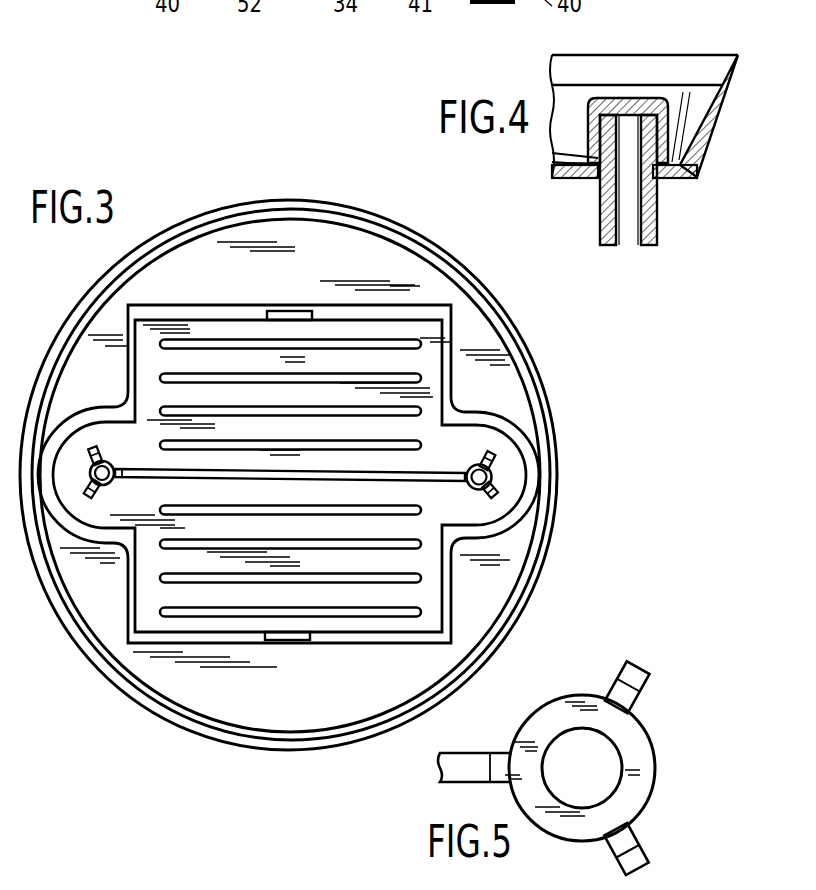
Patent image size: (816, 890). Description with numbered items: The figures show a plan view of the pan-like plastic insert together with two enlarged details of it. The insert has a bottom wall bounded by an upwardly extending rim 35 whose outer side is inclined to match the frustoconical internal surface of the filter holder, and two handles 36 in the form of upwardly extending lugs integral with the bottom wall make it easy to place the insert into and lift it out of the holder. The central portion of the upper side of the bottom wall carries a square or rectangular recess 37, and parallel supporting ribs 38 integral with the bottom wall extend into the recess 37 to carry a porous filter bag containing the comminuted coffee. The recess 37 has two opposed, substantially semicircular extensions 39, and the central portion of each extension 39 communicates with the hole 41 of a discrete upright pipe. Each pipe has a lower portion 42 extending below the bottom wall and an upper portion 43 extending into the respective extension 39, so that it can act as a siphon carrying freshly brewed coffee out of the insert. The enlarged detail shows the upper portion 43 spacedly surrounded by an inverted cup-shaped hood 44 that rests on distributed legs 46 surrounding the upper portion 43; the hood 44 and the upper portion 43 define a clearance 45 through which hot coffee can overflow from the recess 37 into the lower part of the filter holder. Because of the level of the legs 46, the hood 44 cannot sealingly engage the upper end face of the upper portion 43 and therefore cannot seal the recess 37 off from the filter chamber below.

In FIG. 3, the rim 35 is at (538, 357).
In FIG. 3, the handle 36 is at (297, 311).
In FIG. 3, the recess 37 is at (400, 333).
In FIG. 3, the supporting ribs 38 is at (413, 342).
In FIG. 3, the semicircular extension 39 is at (510, 455).
In FIG. 3, the hole 41 is at (484, 477).
In FIG. 5, the hole 41 is at (603, 757).
In FIG. 4, the lower portion 42 is at (658, 222).
In FIG. 3, the upper portion 43 is at (477, 490).
In FIG. 4, the upper portion 43 is at (597, 165).
In FIG. 4, the hood 44 is at (638, 103).
In FIG. 4, the clearance 45 is at (695, 177).
In FIG. 3, the legs 46 is at (496, 497).
In FIG. 5, the legs 46 is at (625, 835).